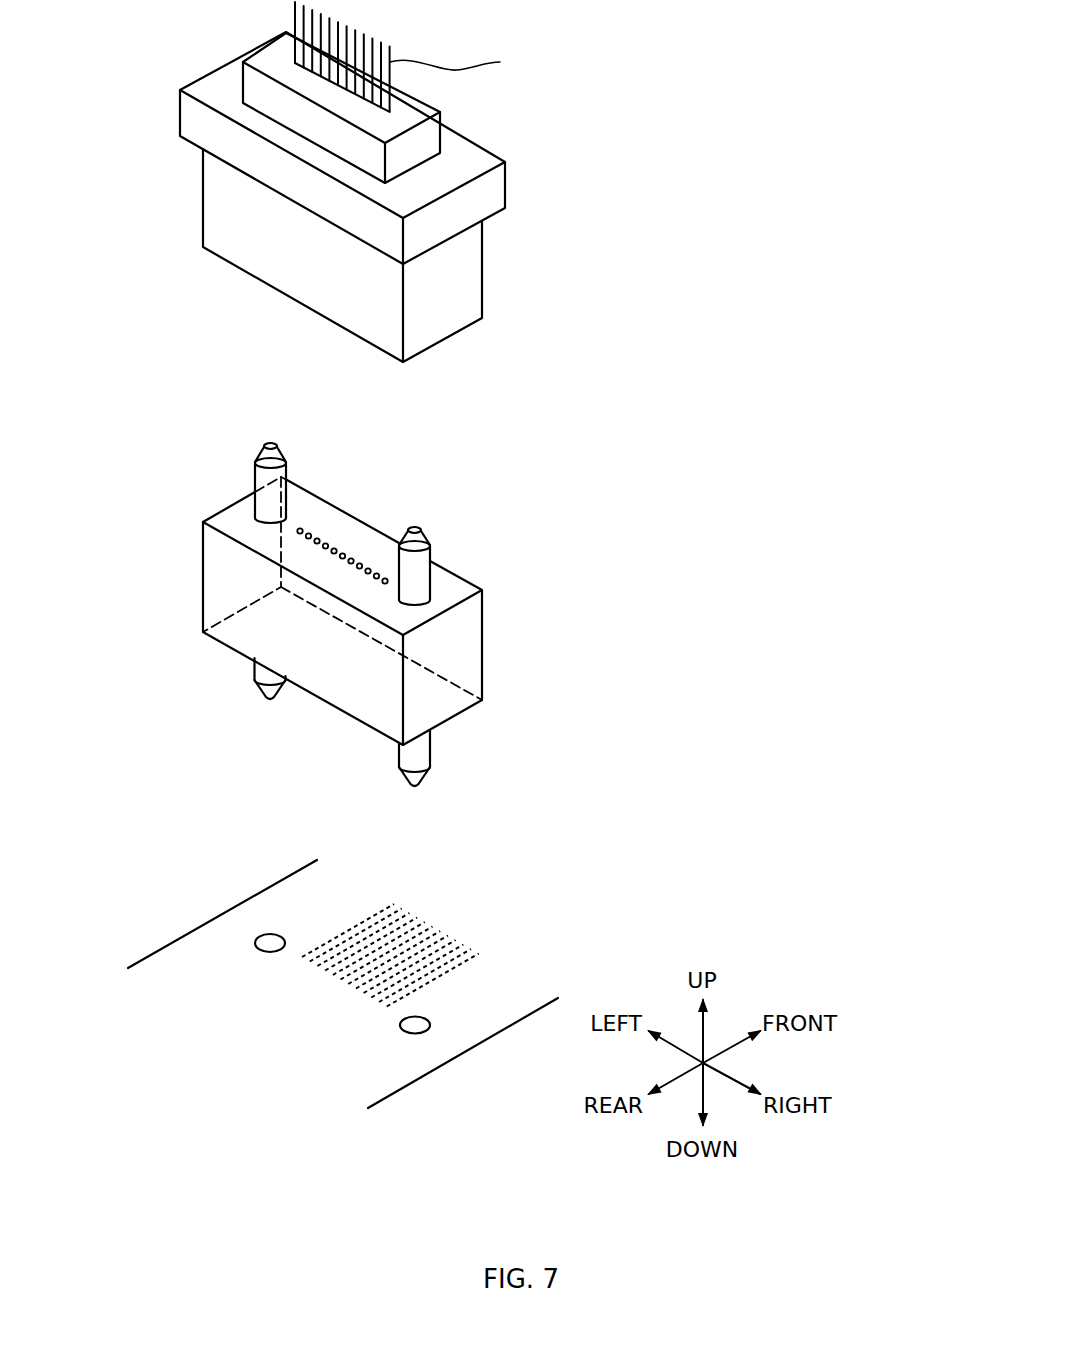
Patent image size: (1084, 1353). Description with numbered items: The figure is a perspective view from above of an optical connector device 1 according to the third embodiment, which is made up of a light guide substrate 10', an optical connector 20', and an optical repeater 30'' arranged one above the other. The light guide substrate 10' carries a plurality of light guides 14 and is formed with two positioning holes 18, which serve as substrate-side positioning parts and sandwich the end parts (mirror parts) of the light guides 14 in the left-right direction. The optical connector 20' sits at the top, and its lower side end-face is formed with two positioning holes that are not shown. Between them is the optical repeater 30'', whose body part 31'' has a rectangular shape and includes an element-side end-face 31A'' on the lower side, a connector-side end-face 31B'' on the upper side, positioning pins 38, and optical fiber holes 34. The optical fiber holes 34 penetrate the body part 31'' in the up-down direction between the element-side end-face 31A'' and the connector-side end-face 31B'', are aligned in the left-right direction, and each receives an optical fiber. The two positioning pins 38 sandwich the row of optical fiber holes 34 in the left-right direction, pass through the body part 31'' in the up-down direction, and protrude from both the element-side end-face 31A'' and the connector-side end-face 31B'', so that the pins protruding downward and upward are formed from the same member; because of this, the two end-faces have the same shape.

The optical connector device 1 is at (679, 422).
The light guide substrate 10' is at (403, 966).
The light guides 14 is at (452, 969).
The positioning holes 18 is at (413, 1033).
The optical connector 20' is at (429, 228).
The optical repeater 30'' is at (443, 587).
The body part 31'' is at (397, 611).
The element-side end-face 31A'' is at (521, 712).
The connector-side end-face 31B'' is at (499, 539).
The optical fiber holes 34 is at (330, 547).
The positioning pins 38 is at (287, 467).